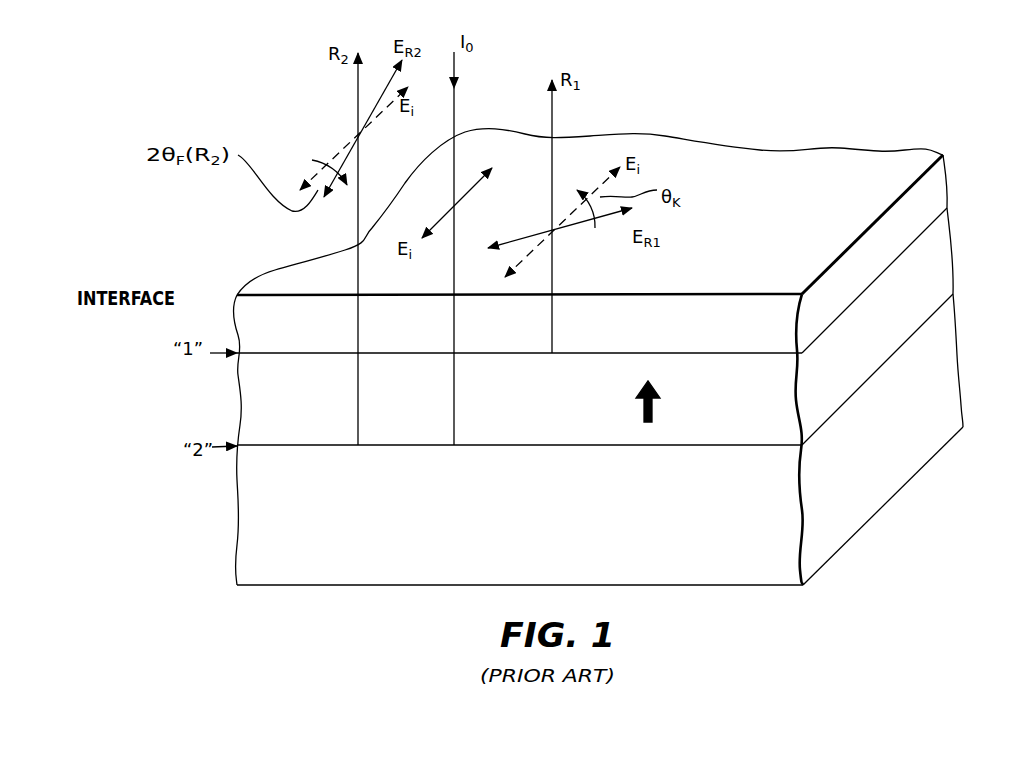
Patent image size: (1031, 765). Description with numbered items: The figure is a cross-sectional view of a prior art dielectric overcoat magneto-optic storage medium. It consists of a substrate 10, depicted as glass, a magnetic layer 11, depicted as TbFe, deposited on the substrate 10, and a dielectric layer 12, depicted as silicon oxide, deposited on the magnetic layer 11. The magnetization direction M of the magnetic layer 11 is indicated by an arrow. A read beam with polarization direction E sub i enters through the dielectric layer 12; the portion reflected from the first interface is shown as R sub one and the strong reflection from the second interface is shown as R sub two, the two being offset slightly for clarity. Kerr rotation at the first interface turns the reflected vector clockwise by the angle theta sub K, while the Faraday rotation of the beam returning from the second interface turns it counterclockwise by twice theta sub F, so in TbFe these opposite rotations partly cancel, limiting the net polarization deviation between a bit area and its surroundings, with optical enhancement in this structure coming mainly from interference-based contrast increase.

The substrate 10 is at (857, 513).
The magnetic layer 11 is at (940, 268).
The dielectric layer 12 is at (930, 199).